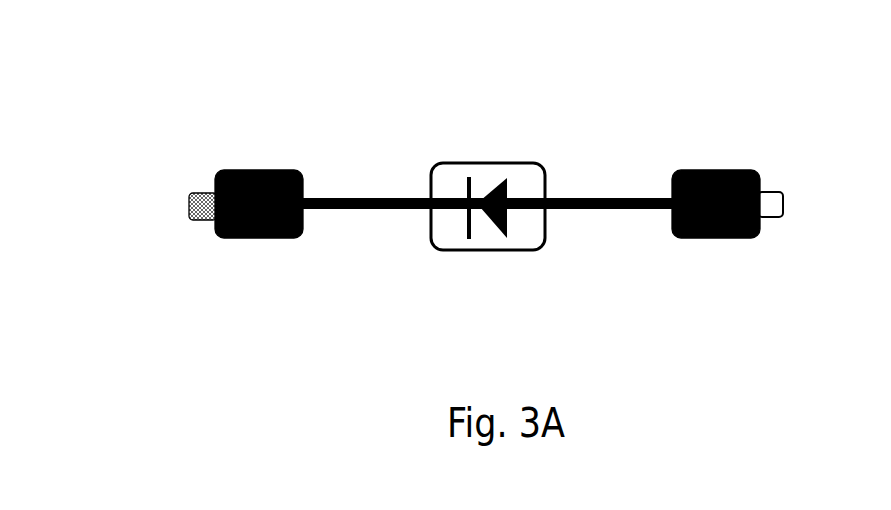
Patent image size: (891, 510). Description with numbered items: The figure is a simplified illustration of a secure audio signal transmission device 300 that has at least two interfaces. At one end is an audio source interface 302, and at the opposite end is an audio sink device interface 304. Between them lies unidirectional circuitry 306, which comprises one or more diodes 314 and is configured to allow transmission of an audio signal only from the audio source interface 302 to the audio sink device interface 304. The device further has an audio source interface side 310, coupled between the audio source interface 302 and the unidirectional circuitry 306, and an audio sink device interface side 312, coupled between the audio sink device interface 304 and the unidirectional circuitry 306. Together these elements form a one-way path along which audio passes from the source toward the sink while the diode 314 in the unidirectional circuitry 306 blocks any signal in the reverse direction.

The secure audio signal transmission device 300 is at (577, 96).
The audio source interface 302 is at (783, 205).
The audio sink device interface 304 is at (187, 203).
The unidirectional circuitry 306 is at (517, 250).
The audio source interface side 310 is at (607, 198).
The audio sink device interface side 312 is at (328, 196).
The diode 314 is at (490, 185).